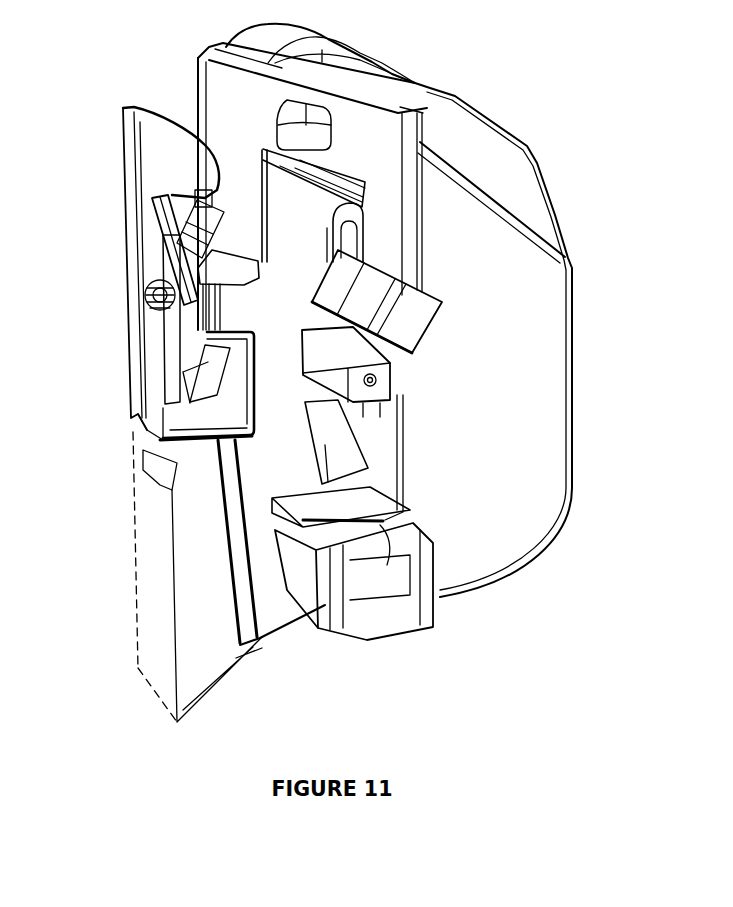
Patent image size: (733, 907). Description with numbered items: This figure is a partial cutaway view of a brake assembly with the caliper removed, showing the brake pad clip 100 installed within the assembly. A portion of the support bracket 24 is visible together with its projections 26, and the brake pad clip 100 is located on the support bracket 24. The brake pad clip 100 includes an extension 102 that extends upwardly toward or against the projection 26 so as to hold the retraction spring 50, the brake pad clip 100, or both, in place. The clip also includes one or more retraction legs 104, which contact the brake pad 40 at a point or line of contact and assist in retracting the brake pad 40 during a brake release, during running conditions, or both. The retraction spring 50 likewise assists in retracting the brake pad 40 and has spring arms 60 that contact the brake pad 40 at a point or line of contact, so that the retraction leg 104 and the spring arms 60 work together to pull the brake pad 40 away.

The support bracket 24 is at (480, 282).
The projections 26 is at (330, 347).
The brake pad 40 is at (165, 170).
The retraction spring 50 is at (150, 224).
The spring arms 60 is at (165, 363).
The brake pad clip 100 is at (210, 430).
The extension 102 is at (387, 387).
The retraction leg 104 is at (210, 370).